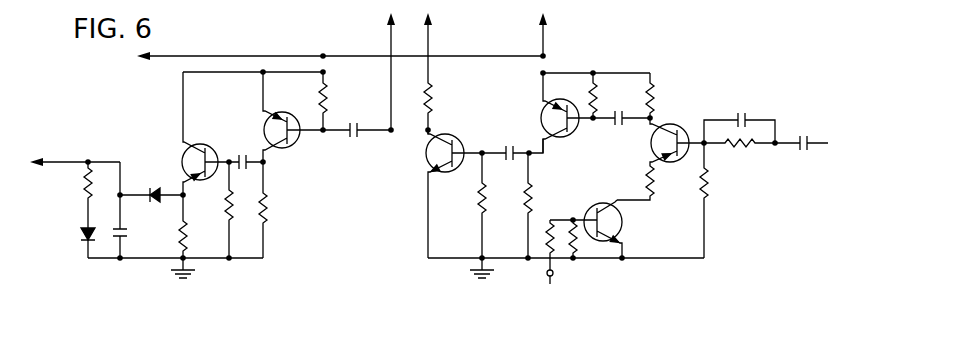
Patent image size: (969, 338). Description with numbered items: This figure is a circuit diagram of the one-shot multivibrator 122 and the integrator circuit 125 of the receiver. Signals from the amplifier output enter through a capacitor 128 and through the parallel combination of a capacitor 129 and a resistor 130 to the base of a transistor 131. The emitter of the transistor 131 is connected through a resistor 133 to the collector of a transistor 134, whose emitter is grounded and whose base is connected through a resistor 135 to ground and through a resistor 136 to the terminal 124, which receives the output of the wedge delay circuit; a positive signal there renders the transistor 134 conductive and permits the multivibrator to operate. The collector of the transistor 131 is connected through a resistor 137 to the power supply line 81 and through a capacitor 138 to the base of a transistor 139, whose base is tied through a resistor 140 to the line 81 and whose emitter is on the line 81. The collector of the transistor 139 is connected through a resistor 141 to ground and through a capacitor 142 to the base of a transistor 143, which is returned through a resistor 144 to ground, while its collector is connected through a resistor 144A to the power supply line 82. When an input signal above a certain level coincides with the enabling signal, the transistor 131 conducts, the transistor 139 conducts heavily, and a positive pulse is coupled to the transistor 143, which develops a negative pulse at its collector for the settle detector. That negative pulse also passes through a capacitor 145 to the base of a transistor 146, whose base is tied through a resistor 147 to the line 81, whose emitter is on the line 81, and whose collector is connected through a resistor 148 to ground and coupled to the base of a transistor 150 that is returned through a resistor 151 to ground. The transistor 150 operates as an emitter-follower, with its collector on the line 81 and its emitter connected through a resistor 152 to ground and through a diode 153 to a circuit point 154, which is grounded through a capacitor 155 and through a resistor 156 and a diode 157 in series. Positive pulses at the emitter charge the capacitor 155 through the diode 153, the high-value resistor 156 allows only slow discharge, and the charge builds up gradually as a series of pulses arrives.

The power supply line 81 is at (545, 33).
The power supply line 82 is at (430, 30).
The one-shot multivibrator 122 is at (417, 242).
The terminal 124 is at (553, 275).
The integrator circuit 125 is at (283, 238).
The capacitor 128 is at (810, 150).
The capacitor 129 is at (752, 118).
The resistor 130 is at (731, 148).
The transistor 131 is at (653, 147).
The resistor 133 is at (652, 190).
The transistor 134 is at (622, 233).
The resistor 135 is at (545, 243).
The resistor 136 is at (706, 198).
The resistor 137 is at (656, 90).
The capacitor 138 is at (656, 116).
The transistor 139 is at (577, 135).
The resistor 140 is at (608, 55).
The resistor 141 is at (533, 192).
The capacitor 142 is at (530, 157).
The transistor 143 is at (460, 143).
The resistor 144 is at (246, 154).
The resistor 144A is at (438, 101).
The capacitor 145 is at (352, 136).
The transistor 146 is at (293, 146).
The resistor 147 is at (327, 108).
The resistor 148 is at (268, 211).
The transistor 150 is at (186, 148).
The resistor 151 is at (235, 212).
The resistor 152 is at (189, 234).
The diode 153 is at (157, 186).
The circuit point 154 is at (126, 193).
The capacitor 155 is at (127, 241).
The resistor 156 is at (82, 198).
The diode 157 is at (81, 228).